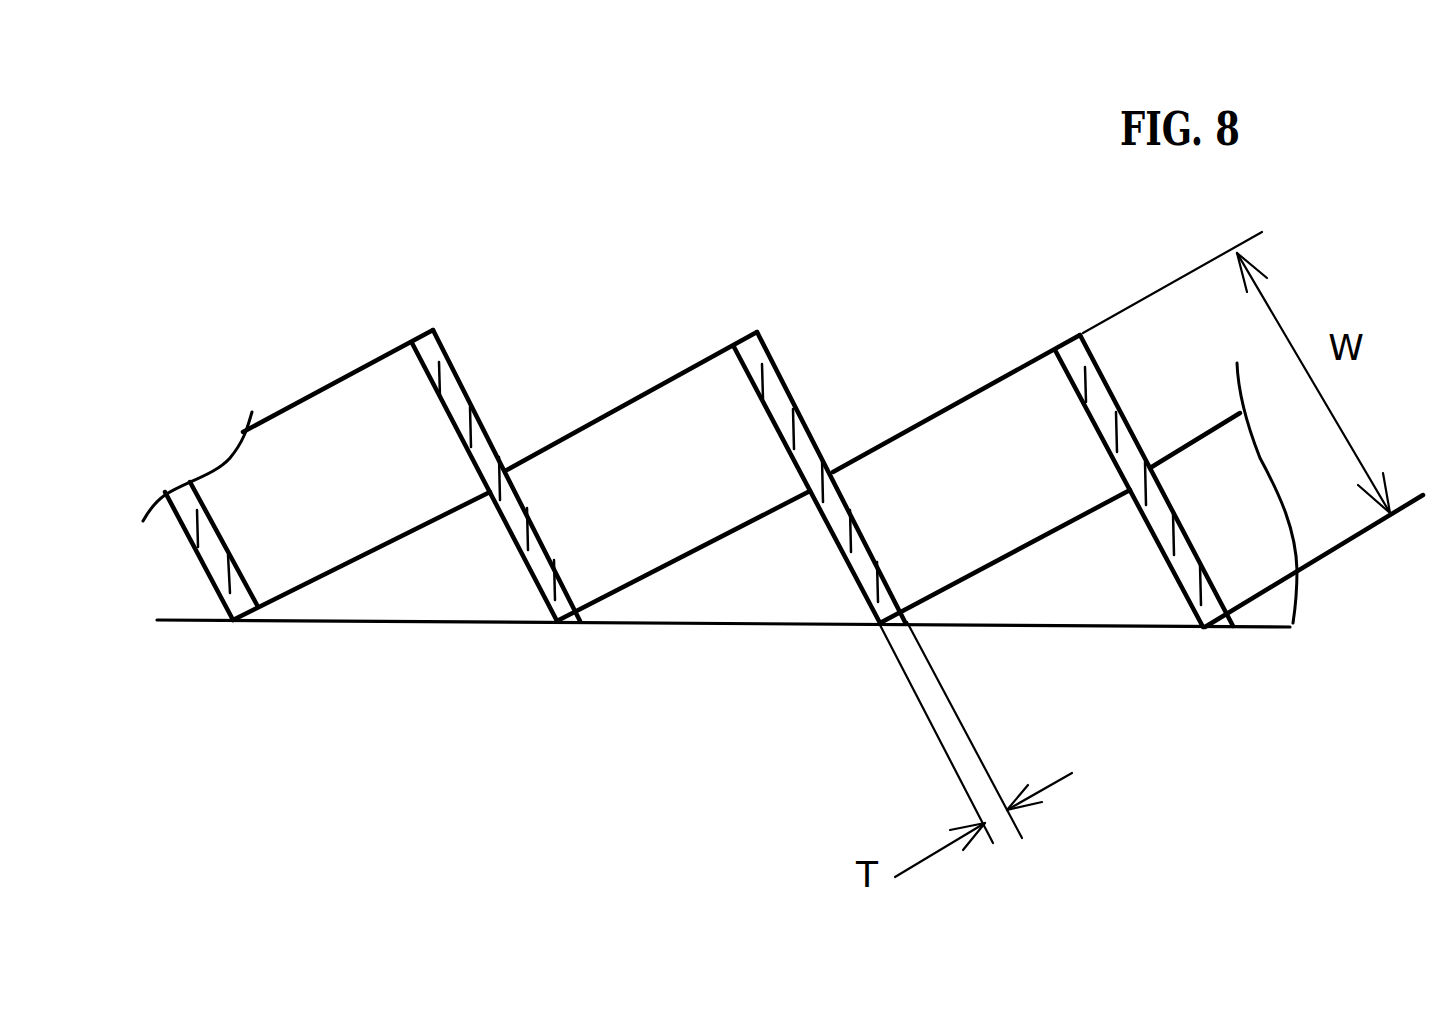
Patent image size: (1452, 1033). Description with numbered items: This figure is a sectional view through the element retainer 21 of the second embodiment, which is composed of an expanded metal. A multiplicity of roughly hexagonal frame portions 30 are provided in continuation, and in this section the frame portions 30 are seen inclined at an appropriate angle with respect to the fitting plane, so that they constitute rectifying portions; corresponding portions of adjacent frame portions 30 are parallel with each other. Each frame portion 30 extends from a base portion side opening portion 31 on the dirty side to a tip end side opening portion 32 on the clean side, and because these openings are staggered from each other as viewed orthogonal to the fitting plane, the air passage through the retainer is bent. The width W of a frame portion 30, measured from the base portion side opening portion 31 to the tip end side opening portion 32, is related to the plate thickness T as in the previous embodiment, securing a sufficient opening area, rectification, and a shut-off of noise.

The element retainer 21 is at (765, 205).
The frame portion 30 is at (445, 351).
The base portion side opening portion 31 is at (372, 552).
The tip end side opening portion 32 is at (348, 374).